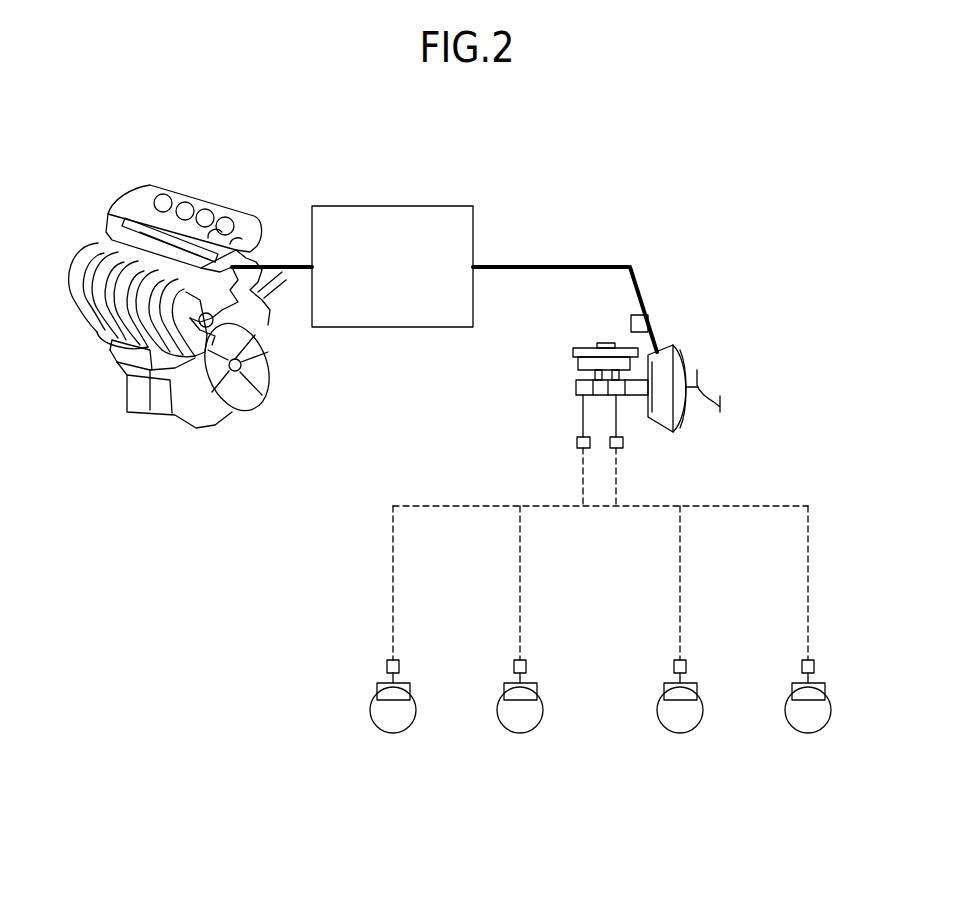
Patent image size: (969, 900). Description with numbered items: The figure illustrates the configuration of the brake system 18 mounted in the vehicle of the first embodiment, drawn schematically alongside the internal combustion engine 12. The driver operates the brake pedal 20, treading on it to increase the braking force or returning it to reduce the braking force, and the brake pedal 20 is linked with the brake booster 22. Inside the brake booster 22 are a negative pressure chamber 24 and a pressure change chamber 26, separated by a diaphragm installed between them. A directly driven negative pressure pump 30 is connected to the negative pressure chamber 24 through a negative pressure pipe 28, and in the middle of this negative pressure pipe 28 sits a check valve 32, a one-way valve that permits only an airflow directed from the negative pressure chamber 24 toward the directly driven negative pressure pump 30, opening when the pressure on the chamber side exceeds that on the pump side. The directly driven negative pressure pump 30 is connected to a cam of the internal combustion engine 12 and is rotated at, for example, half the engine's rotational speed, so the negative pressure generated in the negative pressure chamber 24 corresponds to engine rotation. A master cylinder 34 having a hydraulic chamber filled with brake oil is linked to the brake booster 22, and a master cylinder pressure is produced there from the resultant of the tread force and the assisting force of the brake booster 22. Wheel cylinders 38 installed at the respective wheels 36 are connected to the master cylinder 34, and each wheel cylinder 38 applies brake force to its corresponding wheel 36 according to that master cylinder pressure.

The internal combustion engine 12 is at (117, 362).
The brake system 18 is at (812, 408).
The brake pedal 20 is at (700, 387).
The brake booster 22 is at (680, 423).
The negative pressure chamber 24 is at (658, 410).
The pressure change chamber 26 is at (678, 360).
The negative pressure pipe 28 is at (530, 262).
The directly driven negative pressure pump 30 is at (388, 206).
The check valve 32 is at (648, 312).
The master cylinder 34 is at (576, 384).
The wheel 36 is at (393, 734).
The wheel cylinder 38 is at (387, 666).